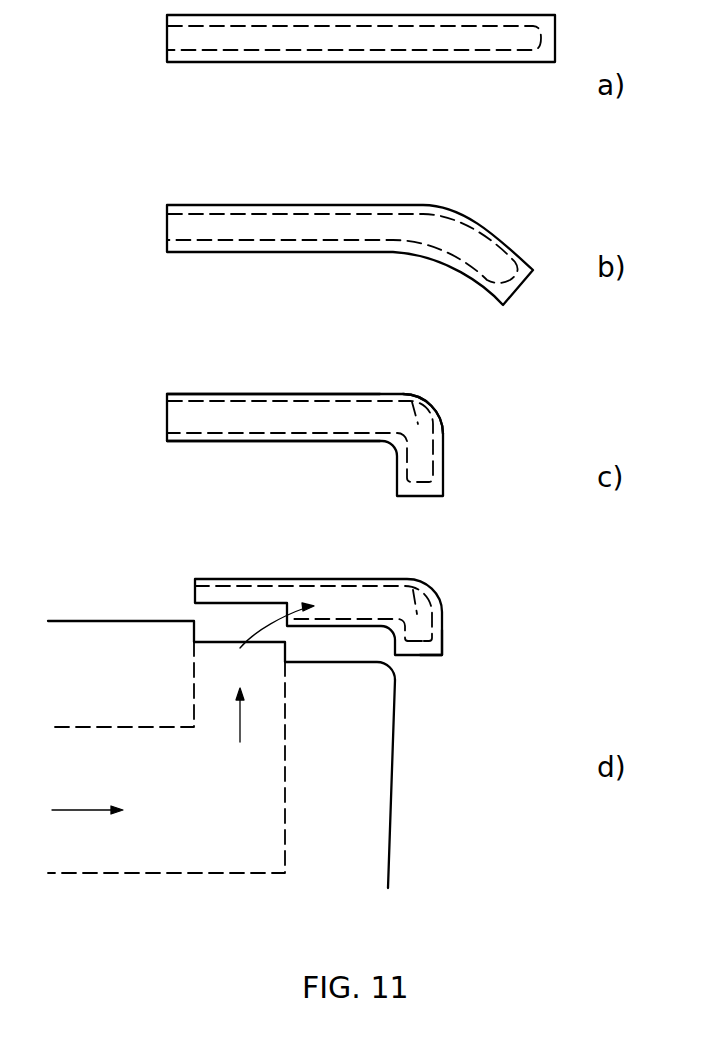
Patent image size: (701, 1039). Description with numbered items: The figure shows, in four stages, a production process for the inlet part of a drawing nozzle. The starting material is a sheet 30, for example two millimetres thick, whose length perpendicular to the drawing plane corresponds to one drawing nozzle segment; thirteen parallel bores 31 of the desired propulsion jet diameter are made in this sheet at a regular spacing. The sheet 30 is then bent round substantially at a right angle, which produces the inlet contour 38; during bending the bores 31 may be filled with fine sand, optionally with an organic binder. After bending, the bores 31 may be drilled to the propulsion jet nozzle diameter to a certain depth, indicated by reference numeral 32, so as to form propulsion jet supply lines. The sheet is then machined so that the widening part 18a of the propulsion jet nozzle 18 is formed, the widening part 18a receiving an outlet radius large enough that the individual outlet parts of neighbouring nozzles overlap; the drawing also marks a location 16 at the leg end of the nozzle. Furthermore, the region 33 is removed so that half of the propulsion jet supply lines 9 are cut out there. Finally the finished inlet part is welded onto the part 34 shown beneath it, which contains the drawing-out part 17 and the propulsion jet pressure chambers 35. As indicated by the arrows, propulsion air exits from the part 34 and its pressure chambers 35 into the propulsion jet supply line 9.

The propulsion jet supply line 9 is at (358, 596).
The leg end of lining element 16 is at (442, 645).
The drawing-out part 17 is at (390, 838).
The propulsion jet nozzle 18 is at (422, 627).
The widening part 18a is at (427, 656).
The sheet 30 is at (400, 62).
The parallel bores 31 is at (305, 38).
The drilled depth of bores 32 is at (316, 420).
The removed region 33 is at (252, 617).
The part 34 is at (90, 633).
The propulsion jet pressure chambers 35 is at (178, 854).
The inlet contour 38 is at (440, 415).